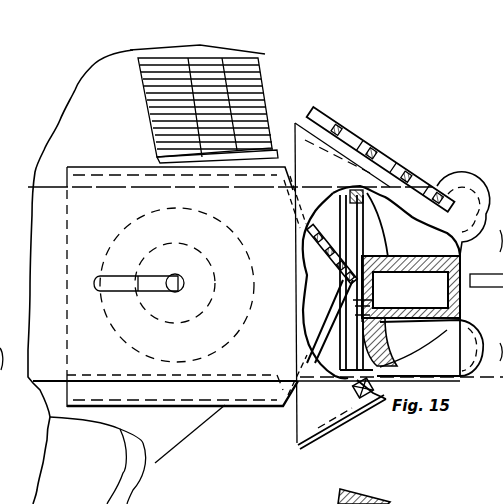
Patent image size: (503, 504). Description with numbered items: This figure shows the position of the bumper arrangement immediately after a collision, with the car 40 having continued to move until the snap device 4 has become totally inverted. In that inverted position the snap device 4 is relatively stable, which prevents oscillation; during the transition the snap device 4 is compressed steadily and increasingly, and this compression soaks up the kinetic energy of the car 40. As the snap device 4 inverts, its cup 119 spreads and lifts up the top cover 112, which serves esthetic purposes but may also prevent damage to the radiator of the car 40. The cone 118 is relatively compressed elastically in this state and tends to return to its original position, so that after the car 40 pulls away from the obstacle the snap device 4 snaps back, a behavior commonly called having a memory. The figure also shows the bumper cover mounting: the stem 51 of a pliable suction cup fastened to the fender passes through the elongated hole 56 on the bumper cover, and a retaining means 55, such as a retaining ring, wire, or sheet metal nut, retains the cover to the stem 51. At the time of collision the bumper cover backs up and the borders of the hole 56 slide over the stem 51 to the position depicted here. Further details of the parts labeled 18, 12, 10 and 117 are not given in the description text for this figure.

The car 40 is at (38, 153).
The elongated hole 56 is at (118, 275).
The stem 51 is at (185, 290).
The housing member 18 is at (342, 445).
The snap device 4 is at (298, 430).
The rail 12 is at (385, 143).
The cone 118 is at (396, 220).
The carriage 10 is at (432, 341).
The top cover 112 is at (481, 362).
The retaining means 55 is at (498, 259).
The cup 119 is at (306, 444).
The fastener block 117 is at (364, 401).